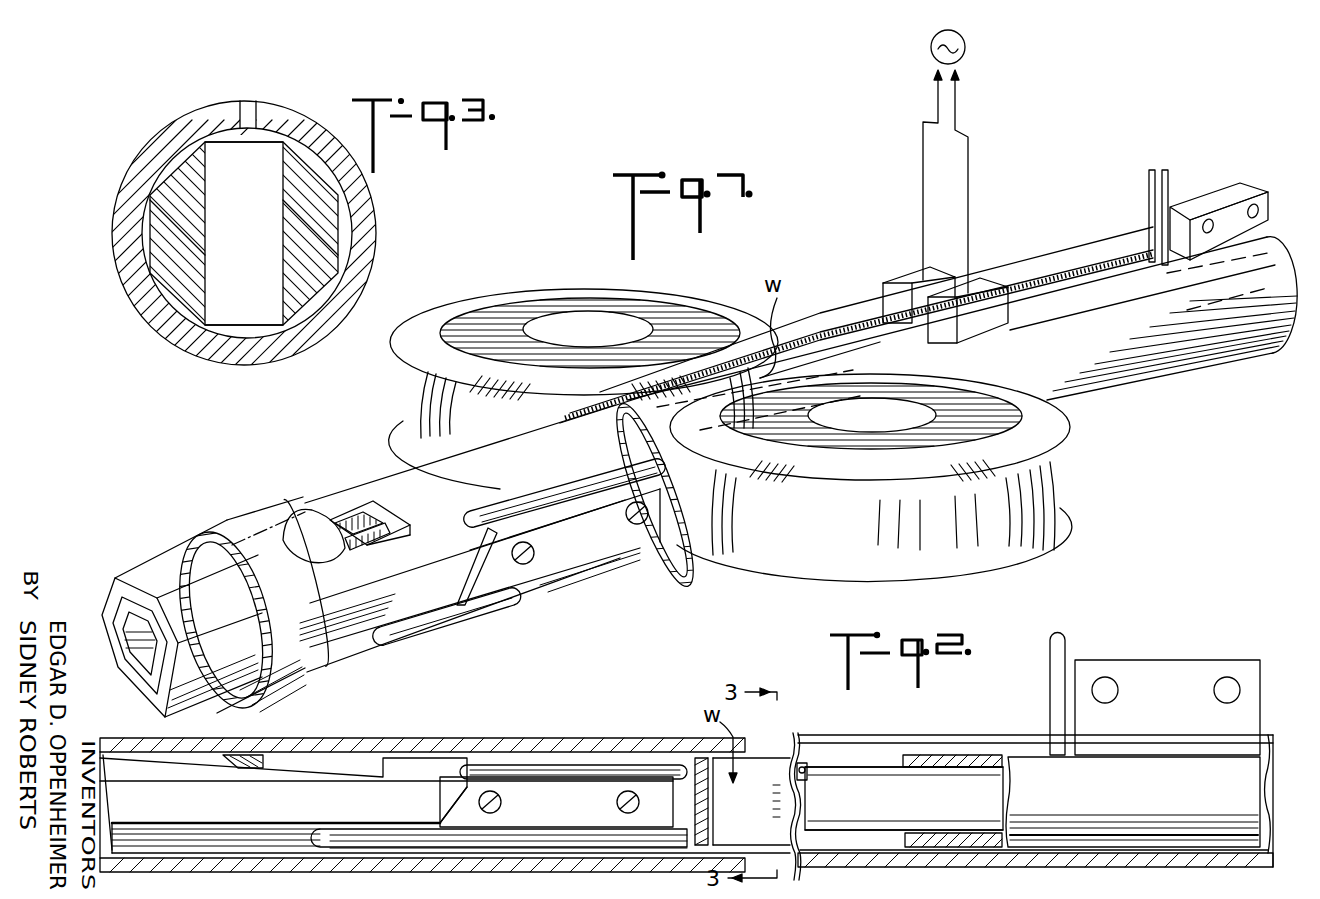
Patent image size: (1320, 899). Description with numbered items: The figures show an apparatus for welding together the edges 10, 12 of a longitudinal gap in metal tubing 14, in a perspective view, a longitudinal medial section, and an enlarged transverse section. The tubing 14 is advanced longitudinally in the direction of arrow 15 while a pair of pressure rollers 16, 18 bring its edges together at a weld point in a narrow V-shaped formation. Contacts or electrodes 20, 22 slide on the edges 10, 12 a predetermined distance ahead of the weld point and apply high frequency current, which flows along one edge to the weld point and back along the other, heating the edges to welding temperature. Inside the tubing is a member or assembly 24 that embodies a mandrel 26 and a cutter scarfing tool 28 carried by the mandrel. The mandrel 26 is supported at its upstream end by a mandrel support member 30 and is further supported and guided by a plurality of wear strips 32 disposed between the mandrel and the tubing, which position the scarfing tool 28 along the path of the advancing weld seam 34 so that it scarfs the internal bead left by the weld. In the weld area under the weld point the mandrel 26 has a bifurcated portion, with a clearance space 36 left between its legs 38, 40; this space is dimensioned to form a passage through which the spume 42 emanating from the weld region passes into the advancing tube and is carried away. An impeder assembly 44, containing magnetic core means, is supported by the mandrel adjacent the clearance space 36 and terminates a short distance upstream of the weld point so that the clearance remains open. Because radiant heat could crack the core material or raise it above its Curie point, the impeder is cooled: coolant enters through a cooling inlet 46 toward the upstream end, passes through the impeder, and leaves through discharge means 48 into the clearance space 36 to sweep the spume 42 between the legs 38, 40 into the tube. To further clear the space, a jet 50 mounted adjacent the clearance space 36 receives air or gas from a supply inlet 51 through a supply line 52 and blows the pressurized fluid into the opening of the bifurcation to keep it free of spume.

In FIG. 1, the edge 10 is at (1120, 260).
In FIG. 1, the edge 12 is at (1131, 252).
In FIG. 1, the metal tubing 14 is at (1108, 396).
In FIG. 2, the metal tubing 14 is at (598, 740).
In FIG. 1, the arrow 15 is at (185, 512).
In FIG. 1, the pressure roller 16 is at (446, 308).
In FIG. 1, the pressure roller 18 is at (1060, 538).
In FIG. 1, the contact 20 is at (883, 294).
In FIG. 1, the contact 22 is at (1003, 316).
In FIG. 3, the member or assembly 24 is at (158, 162).
In FIG. 1, the member or assembly 24 is at (381, 562).
In FIG. 2, the member or assembly 24 is at (358, 762).
In FIG. 3, the mandrel 26 is at (330, 203).
In FIG. 1, the mandrel 26 is at (363, 617).
In FIG. 2, the mandrel 26 is at (630, 780).
In FIG. 1, the cutter scarfing tool 28 is at (309, 514).
In FIG. 2, the cutter scarfing tool 28 is at (262, 752).
In FIG. 1, the mandrel support member 30 is at (1236, 192).
In FIG. 2, the mandrel support member 30 is at (1188, 682).
In FIG. 1, the wear strips 32 is at (564, 492).
In FIG. 2, the wear strips 32 is at (538, 766).
In FIG. 1, the weld seam 34 is at (477, 566).
In FIG. 2, the weld seam 34 is at (445, 750).
In FIG. 3, the clearance space 36 is at (268, 162).
In FIG. 1, the clearance space 36 is at (825, 378).
In FIG. 2, the clearance space 36 is at (782, 745).
In FIG. 3, the leg 38 is at (165, 244).
In FIG. 3, the leg 40 is at (325, 247).
In FIG. 2, the spume 42 is at (770, 835).
In FIG. 2, the impeder assembly 44 is at (883, 760).
In FIG. 1, the cooling inlet 46 is at (1151, 174).
In FIG. 2, the discharge means 48 is at (862, 788).
In FIG. 2, the jet 50 is at (806, 775).
In FIG. 1, the supply inlet 51 is at (1169, 178).
In FIG. 2, the supply inlet 51 is at (1050, 672).
In FIG. 2, the supply line 52 is at (905, 756).